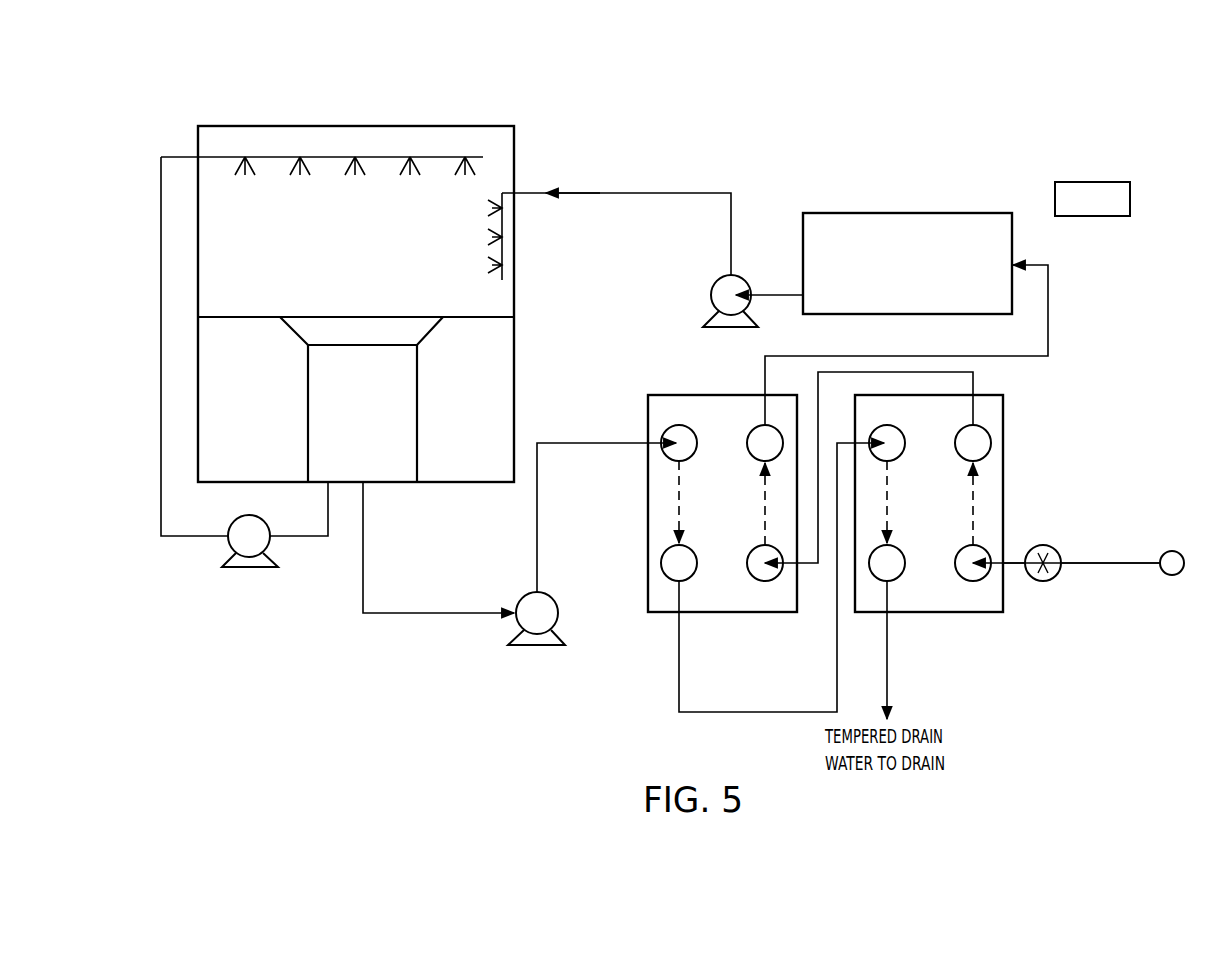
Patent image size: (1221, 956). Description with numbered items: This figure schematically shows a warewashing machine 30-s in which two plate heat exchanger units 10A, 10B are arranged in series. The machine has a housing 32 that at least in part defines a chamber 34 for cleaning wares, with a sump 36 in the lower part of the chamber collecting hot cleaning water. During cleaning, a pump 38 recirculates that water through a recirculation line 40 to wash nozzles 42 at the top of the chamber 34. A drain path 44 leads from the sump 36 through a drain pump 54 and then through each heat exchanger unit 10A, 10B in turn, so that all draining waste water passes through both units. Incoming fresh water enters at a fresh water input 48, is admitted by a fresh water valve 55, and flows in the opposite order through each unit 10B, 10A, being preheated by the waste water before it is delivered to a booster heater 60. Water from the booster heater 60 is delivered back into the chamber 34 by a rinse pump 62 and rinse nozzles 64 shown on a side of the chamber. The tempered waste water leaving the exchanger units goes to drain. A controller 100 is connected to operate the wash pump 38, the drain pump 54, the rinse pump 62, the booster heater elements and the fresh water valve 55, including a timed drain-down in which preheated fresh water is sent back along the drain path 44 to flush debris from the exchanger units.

The machine 30-s is at (562, 122).
The housing 32 is at (515, 298).
The chamber 34 is at (356, 283).
The sump 36 is at (320, 404).
The pump 38 is at (247, 570).
The recirculation line 40 is at (161, 282).
The wash nozzles 42 is at (304, 165).
The drain path 44 is at (363, 568).
The fresh water input 48 is at (1172, 551).
The drain pump 54 is at (558, 613).
The fresh water valve 55 is at (1041, 545).
The booster heater 60 is at (905, 213).
The rinse pump 62 is at (711, 297).
The rinse nozzles 64 is at (504, 247).
The controller 100 is at (1092, 199).
The plate heat exchanger unit 10A is at (723, 616).
The plate heat exchanger unit 10B is at (931, 616).